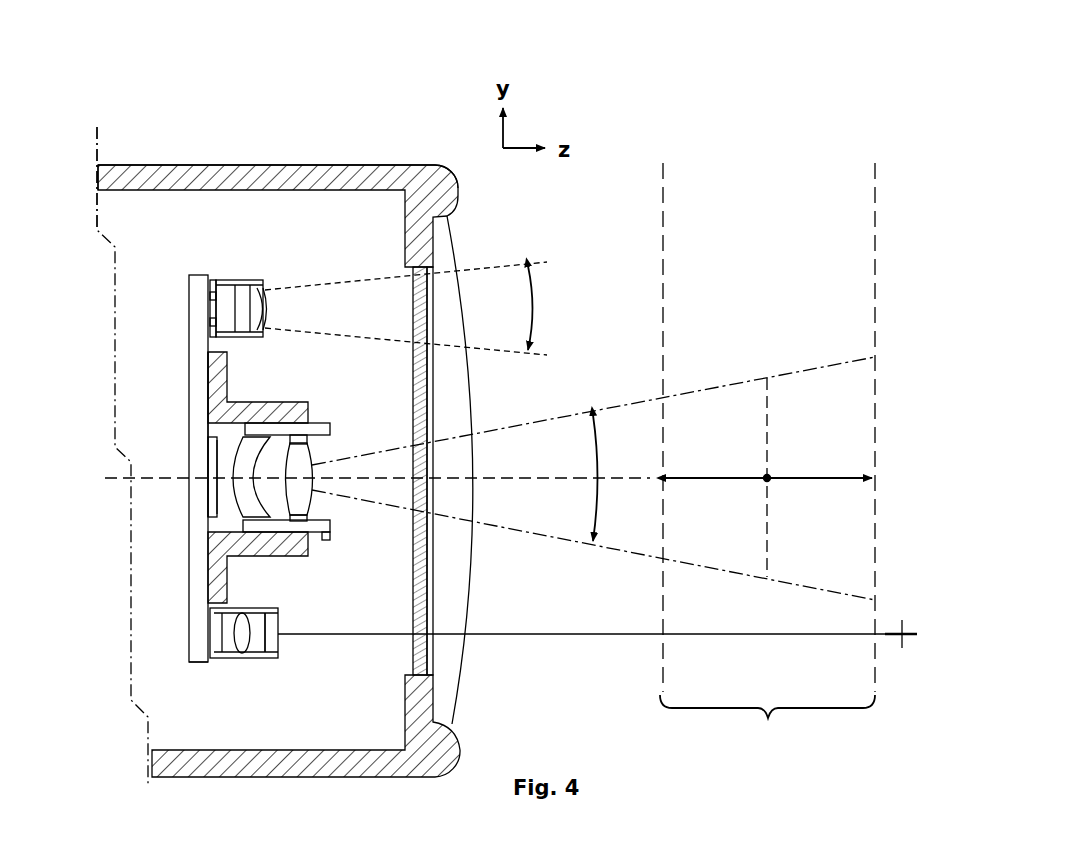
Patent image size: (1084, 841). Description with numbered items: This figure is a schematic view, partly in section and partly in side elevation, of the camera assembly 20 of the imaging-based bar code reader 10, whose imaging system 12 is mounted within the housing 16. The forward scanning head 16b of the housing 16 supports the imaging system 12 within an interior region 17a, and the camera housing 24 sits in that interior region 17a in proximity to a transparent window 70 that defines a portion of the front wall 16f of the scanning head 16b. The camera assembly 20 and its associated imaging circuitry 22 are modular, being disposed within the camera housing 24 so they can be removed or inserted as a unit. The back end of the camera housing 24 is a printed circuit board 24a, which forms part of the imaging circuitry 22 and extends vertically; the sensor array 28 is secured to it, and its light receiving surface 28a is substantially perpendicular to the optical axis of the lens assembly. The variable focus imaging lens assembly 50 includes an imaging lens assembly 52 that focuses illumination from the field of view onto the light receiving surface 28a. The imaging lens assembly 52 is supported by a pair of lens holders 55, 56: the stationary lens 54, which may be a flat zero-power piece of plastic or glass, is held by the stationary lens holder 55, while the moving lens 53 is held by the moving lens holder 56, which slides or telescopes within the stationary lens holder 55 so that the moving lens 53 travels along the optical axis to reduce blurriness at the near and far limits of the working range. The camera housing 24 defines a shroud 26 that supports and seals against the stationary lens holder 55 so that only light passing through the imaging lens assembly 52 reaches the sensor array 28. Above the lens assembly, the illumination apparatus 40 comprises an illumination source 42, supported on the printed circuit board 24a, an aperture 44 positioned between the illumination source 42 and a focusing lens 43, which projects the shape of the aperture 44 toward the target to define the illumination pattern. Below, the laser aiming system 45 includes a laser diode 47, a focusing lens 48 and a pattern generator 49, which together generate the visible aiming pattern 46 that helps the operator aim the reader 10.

The imaging-based bar code reader 10 is at (143, 102).
The imaging system 12 is at (122, 362).
The housing 16 is at (345, 148).
The scanning head portion 16b is at (287, 165).
The front wall 16f is at (459, 186).
The interior region 17a is at (152, 212).
The camera assembly 20 is at (178, 378).
The imaging circuitry 22 is at (188, 437).
The camera housing 24 is at (200, 347).
The printed circuit board 24a is at (200, 622).
The shroud 26 is at (246, 410).
The sensor array 28 is at (216, 488).
The light receiving surface 28a is at (222, 445).
The illumination apparatus 40 is at (261, 266).
The illumination source 42 is at (216, 279).
The focusing lens 43 is at (273, 308).
The aperture 44 is at (243, 282).
The laser aiming system 45 is at (263, 681).
The aiming pattern 46 is at (904, 640).
The laser diode 47 is at (215, 643).
The focusing lens 48 is at (240, 642).
The pattern generator 49 is at (270, 645).
The variable focus imaging lens assembly 50 is at (368, 470).
The imaging lens assembly 52 is at (318, 460).
The moving lens 53 is at (297, 497).
The stationary lens 54 is at (240, 513).
The stationary lens holder 55 is at (308, 432).
The moving lens holder 56 is at (305, 442).
The transparent window 70 is at (427, 548).